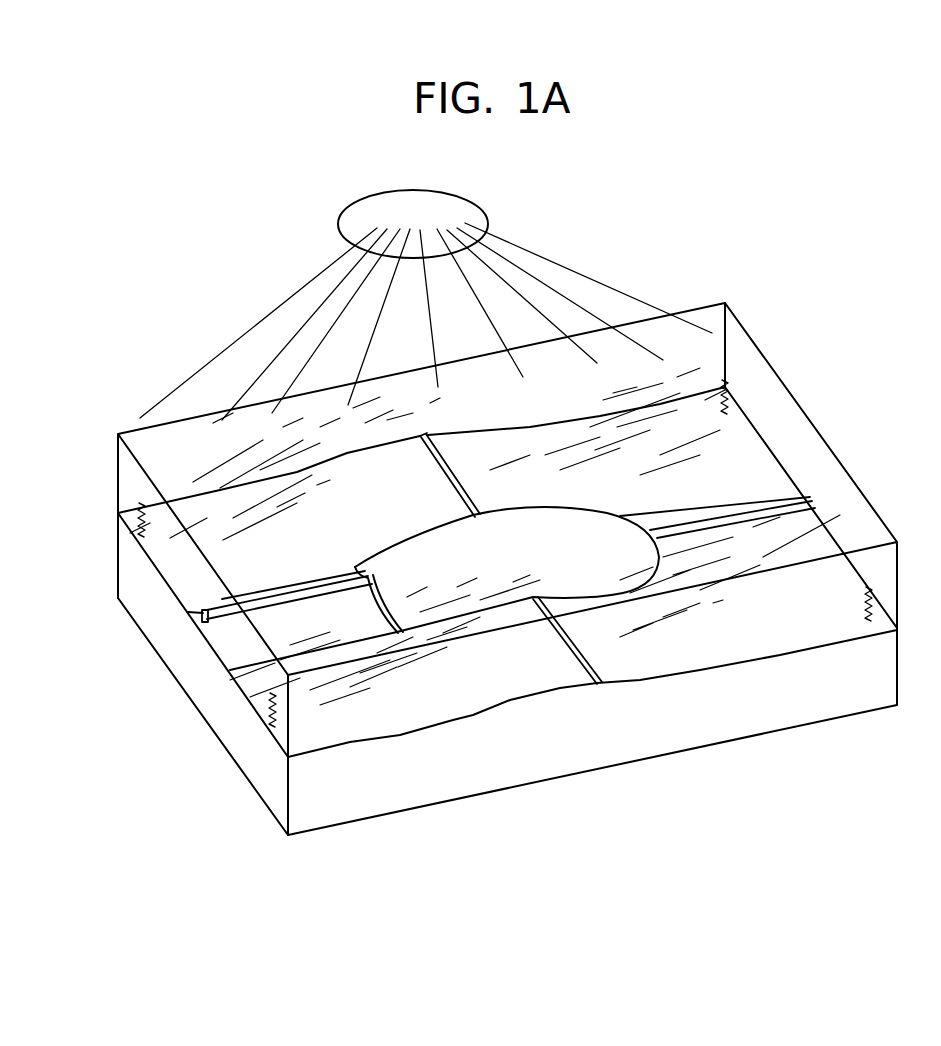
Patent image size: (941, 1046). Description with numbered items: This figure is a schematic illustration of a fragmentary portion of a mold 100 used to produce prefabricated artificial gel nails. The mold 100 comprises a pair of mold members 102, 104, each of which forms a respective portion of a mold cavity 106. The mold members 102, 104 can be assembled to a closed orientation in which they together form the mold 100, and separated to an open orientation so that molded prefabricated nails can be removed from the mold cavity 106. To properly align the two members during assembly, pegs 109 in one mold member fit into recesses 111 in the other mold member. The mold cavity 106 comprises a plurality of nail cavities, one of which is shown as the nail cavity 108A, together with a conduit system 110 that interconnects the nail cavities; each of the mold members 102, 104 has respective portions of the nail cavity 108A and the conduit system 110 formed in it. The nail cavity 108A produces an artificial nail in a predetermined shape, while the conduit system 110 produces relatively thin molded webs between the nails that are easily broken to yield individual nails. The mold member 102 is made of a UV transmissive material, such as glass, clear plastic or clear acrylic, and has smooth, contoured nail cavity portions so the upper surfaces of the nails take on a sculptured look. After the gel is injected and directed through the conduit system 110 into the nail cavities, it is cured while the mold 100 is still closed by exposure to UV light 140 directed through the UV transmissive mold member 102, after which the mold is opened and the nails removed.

The mold 100 is at (700, 277).
The mold member 102 is at (780, 427).
The mold member 104 is at (480, 775).
The mold cavity 106 is at (356, 610).
The nail cavity 108A is at (580, 530).
The peg 109 is at (873, 592).
The conduit system 110 is at (225, 606).
The recess 111 is at (868, 598).
The UV light 140 is at (463, 213).